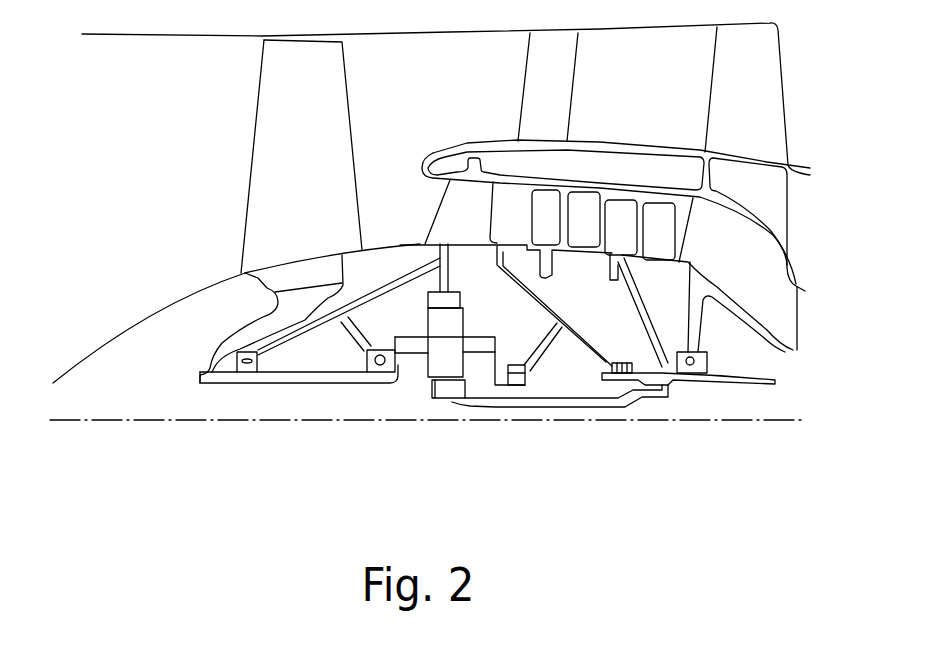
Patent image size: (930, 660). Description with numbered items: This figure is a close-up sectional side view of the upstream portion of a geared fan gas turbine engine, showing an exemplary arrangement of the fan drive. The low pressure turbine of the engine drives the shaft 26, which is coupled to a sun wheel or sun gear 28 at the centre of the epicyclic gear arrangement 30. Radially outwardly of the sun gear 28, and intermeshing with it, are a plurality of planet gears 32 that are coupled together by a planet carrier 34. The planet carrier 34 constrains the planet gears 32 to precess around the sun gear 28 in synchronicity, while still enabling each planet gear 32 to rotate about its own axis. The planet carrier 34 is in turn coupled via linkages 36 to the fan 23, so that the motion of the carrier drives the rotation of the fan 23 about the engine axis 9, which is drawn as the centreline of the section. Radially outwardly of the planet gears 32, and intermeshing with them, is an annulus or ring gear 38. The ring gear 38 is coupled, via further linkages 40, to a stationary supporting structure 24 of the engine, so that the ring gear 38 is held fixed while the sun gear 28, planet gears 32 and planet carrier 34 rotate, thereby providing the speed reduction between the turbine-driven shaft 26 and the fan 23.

The engine axis 9 is at (230, 422).
The fan 23 is at (268, 161).
The stationary supporting structure 24 is at (453, 209).
The shaft 26 is at (587, 402).
The sun gear 28 is at (448, 390).
The epicyclic gear arrangement 30 is at (401, 398).
The planet gears 32 is at (435, 352).
The planet carrier 34 is at (484, 378).
The linkages 36 is at (398, 364).
The ring gear 38 is at (430, 299).
The linkages 40 is at (452, 272).